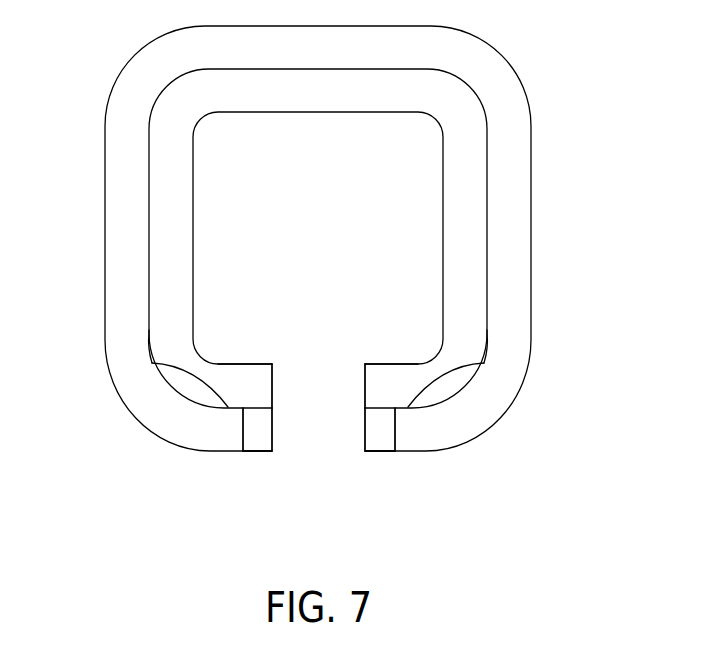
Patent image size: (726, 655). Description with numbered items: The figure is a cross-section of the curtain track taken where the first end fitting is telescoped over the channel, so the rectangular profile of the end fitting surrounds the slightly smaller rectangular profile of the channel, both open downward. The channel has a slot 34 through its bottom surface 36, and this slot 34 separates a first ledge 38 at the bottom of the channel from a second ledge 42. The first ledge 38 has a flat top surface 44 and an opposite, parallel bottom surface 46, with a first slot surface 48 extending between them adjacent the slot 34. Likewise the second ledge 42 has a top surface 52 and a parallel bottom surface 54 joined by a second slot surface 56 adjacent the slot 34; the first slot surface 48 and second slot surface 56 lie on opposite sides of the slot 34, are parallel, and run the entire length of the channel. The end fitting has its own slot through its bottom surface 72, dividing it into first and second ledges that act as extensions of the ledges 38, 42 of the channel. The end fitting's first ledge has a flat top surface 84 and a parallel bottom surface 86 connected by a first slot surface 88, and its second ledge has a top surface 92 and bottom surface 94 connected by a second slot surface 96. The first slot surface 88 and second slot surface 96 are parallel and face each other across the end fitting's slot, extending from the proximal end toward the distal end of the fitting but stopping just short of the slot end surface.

The slot 34 is at (307, 472).
The bottom surface 36 is at (206, 411).
The first ledge 38 is at (275, 362).
The second ledge 42 is at (363, 362).
The top surface 44 is at (231, 363).
The bottom surface 46 is at (242, 412).
The first slot surface 48 is at (272, 382).
The top surface 52 is at (405, 363).
The bottom surface 54 is at (395, 452).
The second slot surface 56 is at (365, 391).
The bottom surface 72 is at (465, 450).
The top surface 84 is at (151, 363).
The bottom surface 86 is at (255, 452).
The first slot surface 88 is at (272, 430).
The top surface 92 is at (485, 363).
The bottom surface 94 is at (380, 452).
The second slot surface 96 is at (365, 441).